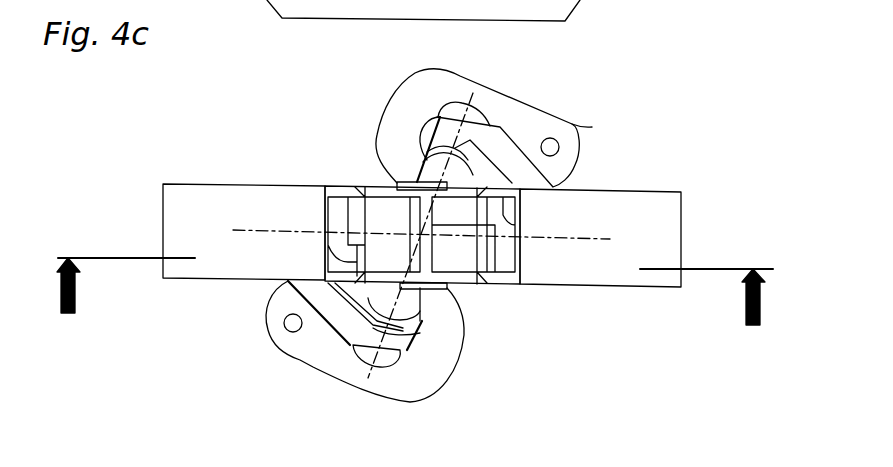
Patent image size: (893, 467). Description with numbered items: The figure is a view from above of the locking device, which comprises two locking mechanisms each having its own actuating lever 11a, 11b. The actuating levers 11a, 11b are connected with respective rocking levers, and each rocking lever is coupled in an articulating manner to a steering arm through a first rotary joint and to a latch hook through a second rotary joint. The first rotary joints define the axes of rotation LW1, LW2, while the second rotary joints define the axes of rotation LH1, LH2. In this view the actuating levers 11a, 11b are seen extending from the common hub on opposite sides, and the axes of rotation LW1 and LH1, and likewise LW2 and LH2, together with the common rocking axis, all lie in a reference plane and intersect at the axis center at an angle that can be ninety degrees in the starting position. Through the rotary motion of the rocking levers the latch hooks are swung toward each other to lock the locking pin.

The actuating lever 11a is at (585, 127).
The actuating lever 11b is at (453, 350).
The axis of rotation LH1 is at (572, 233).
The axis of rotation LH2 is at (257, 230).
The axis of rotation LW1 is at (473, 100).
The axis of rotation LW2 is at (315, 366).